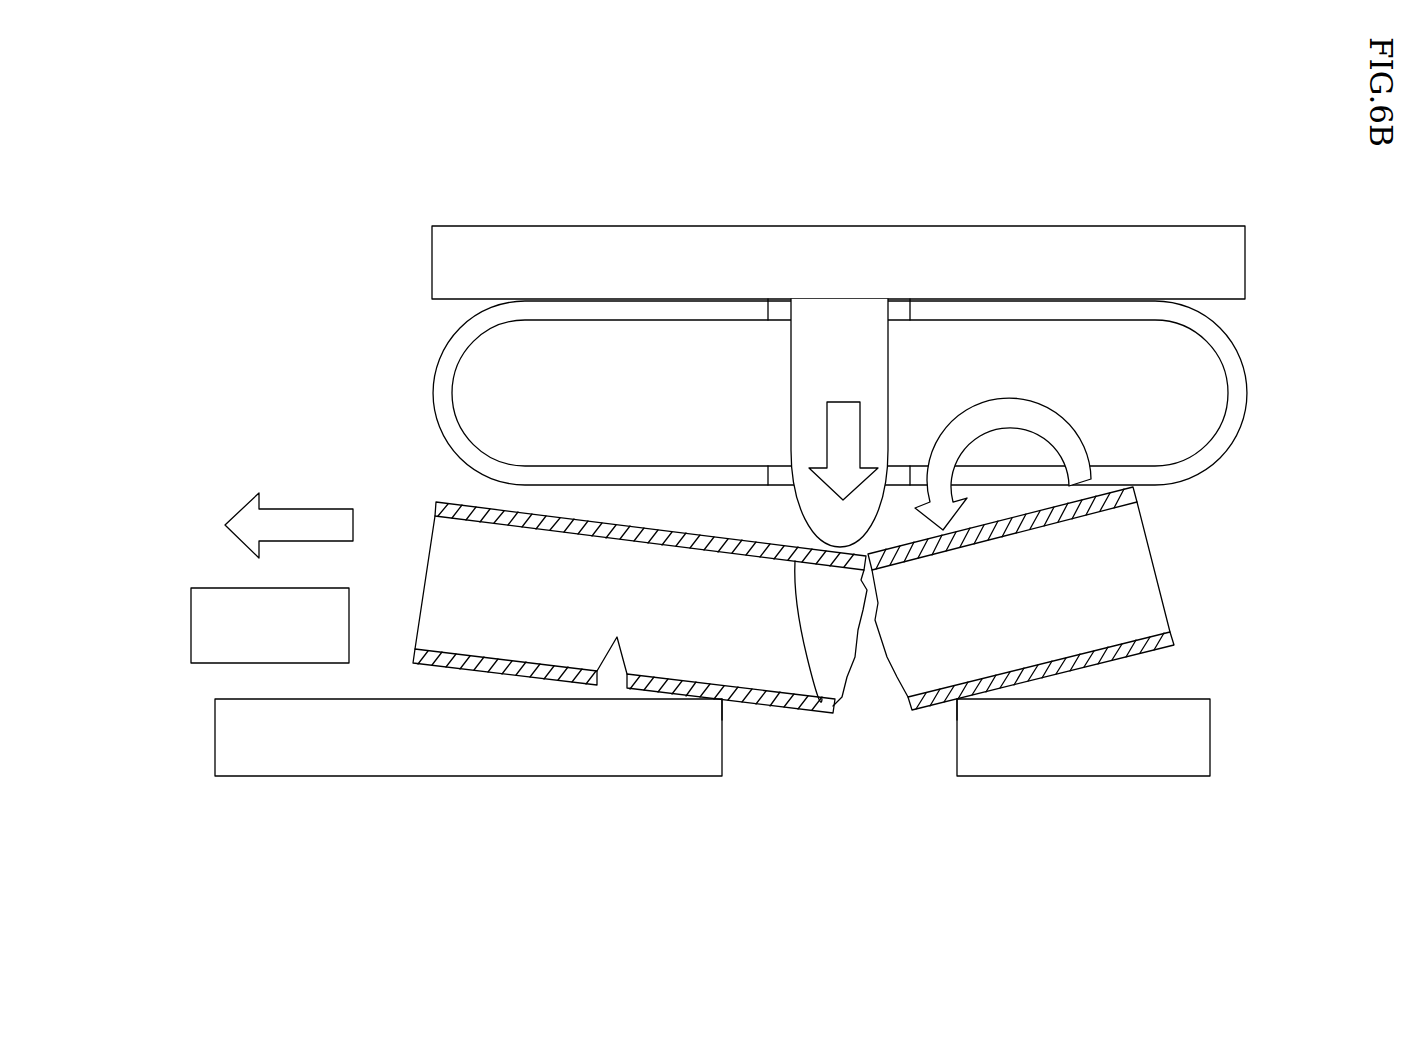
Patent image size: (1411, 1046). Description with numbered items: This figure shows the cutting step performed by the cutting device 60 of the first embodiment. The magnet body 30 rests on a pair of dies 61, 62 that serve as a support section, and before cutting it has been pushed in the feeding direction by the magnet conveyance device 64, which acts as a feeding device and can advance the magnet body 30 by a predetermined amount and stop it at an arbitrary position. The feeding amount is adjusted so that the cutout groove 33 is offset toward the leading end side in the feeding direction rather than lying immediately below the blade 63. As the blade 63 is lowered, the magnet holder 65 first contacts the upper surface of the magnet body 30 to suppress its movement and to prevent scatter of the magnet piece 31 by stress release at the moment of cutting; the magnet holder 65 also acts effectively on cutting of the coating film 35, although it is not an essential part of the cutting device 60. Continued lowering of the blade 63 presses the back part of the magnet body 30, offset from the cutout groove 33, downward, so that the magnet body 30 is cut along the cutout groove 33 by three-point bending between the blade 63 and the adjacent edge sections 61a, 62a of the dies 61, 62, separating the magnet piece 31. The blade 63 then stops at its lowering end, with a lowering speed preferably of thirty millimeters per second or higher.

The cutting device 60 is at (1005, 186).
The magnet holder 65 is at (1224, 352).
The blade 63 is at (801, 378).
The magnet body 30 is at (701, 528).
The magnet piece 31 is at (1127, 553).
The cutout groove 33 is at (614, 668).
The coating film 35 is at (833, 706).
The magnet conveyance device 64 is at (310, 613).
The die 61 is at (663, 752).
The edge section 61a is at (722, 700).
The die 62 is at (1060, 752).
The edge section 62a is at (955, 700).